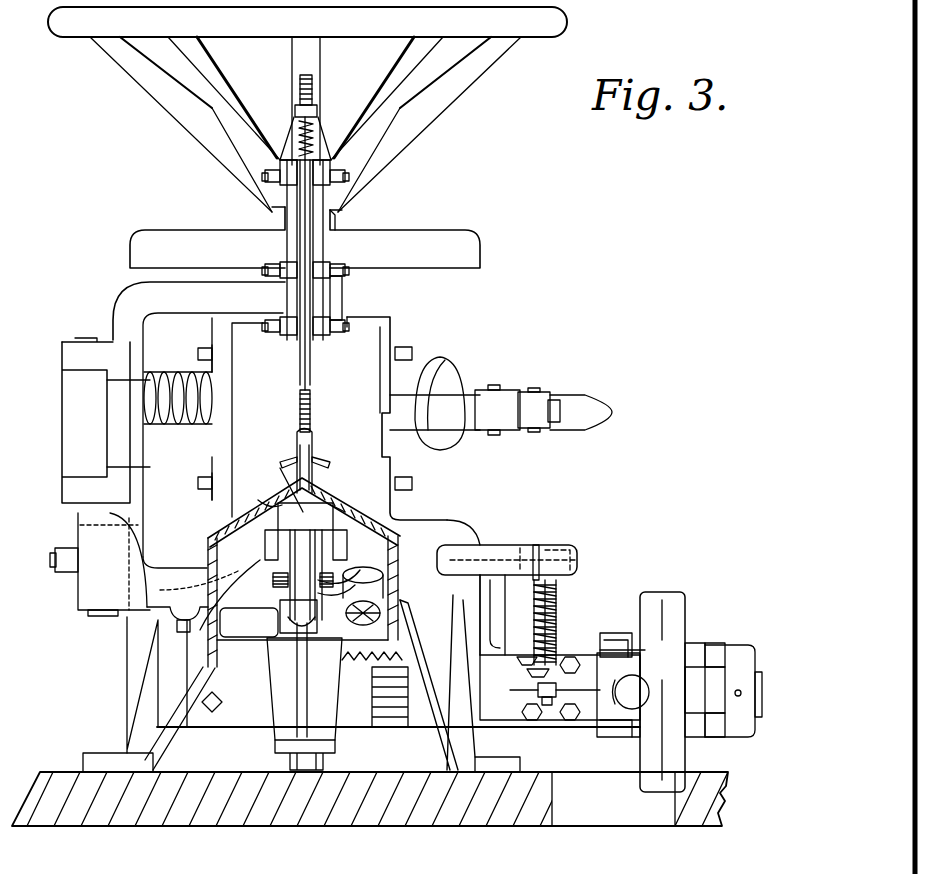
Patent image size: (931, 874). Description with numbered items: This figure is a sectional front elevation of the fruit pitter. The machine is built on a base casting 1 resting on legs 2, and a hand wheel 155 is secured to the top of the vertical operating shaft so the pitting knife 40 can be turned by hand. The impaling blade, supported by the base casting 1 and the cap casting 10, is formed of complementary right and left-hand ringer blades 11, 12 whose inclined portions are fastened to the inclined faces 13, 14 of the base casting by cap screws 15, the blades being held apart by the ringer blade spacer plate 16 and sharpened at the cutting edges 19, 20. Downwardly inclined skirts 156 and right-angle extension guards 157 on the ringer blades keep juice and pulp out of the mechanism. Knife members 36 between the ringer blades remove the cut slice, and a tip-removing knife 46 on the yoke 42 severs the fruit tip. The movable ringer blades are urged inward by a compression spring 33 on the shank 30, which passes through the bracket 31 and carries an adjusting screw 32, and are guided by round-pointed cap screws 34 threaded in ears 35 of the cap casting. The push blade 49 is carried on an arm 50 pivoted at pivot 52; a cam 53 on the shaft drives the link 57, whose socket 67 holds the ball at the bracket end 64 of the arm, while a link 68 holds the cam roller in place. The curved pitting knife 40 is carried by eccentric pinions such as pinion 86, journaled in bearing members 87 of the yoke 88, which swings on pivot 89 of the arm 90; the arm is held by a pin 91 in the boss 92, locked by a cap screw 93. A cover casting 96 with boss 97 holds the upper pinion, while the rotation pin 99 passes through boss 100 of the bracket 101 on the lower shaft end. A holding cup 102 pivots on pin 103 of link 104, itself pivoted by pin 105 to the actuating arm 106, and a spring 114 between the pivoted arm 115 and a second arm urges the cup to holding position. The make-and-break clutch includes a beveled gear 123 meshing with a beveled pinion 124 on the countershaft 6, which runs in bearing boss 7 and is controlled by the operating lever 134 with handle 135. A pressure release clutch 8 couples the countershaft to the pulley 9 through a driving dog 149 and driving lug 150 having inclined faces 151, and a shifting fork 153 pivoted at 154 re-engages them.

The base casting 1 is at (121, 680).
The legs 2 is at (93, 752).
The countershaft 6 is at (765, 683).
The bearing boss 7 is at (490, 727).
The pressure release clutch 8 is at (700, 638).
The pulley 9 is at (655, 595).
The cap casting 10 is at (380, 305).
The right-hand ringer blade 11 is at (325, 461).
The left-hand ringer blade 12 is at (297, 459).
The inclined face 13 is at (387, 507).
The inclined face 14 is at (208, 547).
The cap screws 15 is at (240, 520).
The ringer blade spacer plate 16 is at (312, 480).
The cutting edge 19 is at (297, 444).
The cutting edge 20 is at (302, 384).
The shank 30 is at (318, 138).
The bracket 31 is at (287, 135).
The adjusting screw 32 is at (300, 95).
The compression spring 33 is at (312, 125).
The cap screws 34 is at (268, 180).
The ears 35 is at (340, 200).
The knife members 36 is at (295, 286).
The pitting knife 40 is at (312, 410).
The yoke 42 is at (250, 453).
The tip-removing knife 46 is at (330, 462).
The push blade 49 is at (290, 498).
The arm 50 is at (250, 534).
The pivot 52 is at (350, 520).
The cam 53 is at (450, 522).
The link 57 is at (370, 690).
The bracket end 64 is at (398, 554).
The socket 67 is at (388, 589).
The link 68 is at (262, 620).
The eccentric pinion 86 is at (283, 578).
The bearing members 87 is at (345, 297).
The yoke 88 is at (130, 282).
The pivot 89 is at (75, 338).
The arm 90 is at (65, 410).
The pin 91 is at (100, 618).
The boss 92 is at (82, 597).
The cap screw 93 is at (58, 574).
The cover casting 96 is at (434, 232).
The boss 97 is at (337, 224).
The rotation pin 99 is at (295, 635).
The boss 100 is at (320, 635).
The bracket 101 is at (290, 690).
The holding cup 102 is at (456, 452).
The pin 103 is at (492, 385).
The link 104 is at (525, 390).
The pin 105 is at (545, 388).
The actuating arm 106 is at (430, 400).
The spring 114 is at (178, 426).
The pivoted arm 115 is at (110, 384).
The beveled gear 123 is at (425, 605).
The beveled pinion 124 is at (398, 728).
The operating lever 134 is at (580, 550).
The operating handle 135 is at (512, 545).
The driving dog 149 is at (730, 745).
The driving lug 150 is at (720, 643).
The inclined faces 151 is at (722, 648).
The shifting fork 153 is at (636, 682).
The pivotal support 154 is at (615, 633).
The hand wheel 155 is at (562, 22).
The inclined skirts 156 is at (268, 502).
The right-angle extension guards 157 is at (245, 335).